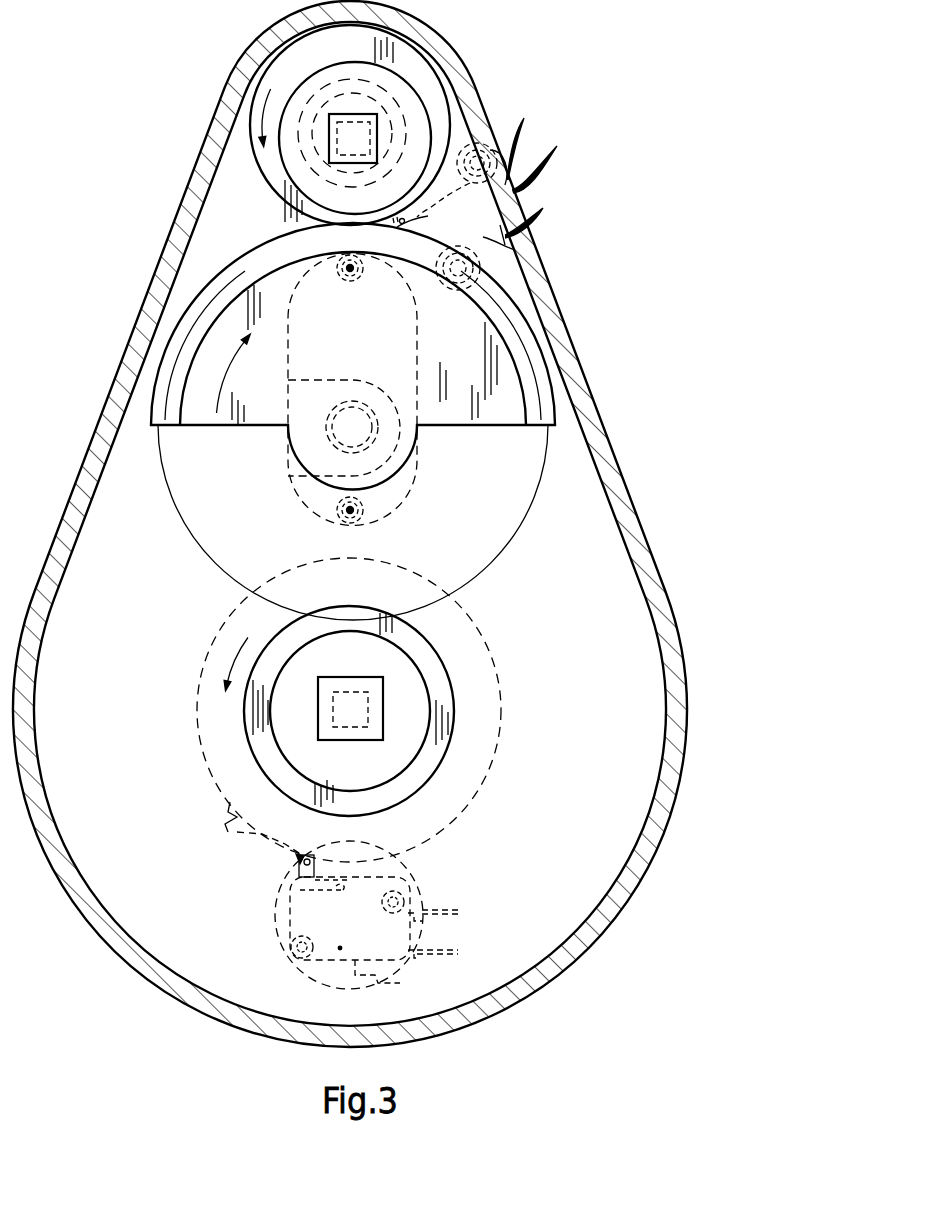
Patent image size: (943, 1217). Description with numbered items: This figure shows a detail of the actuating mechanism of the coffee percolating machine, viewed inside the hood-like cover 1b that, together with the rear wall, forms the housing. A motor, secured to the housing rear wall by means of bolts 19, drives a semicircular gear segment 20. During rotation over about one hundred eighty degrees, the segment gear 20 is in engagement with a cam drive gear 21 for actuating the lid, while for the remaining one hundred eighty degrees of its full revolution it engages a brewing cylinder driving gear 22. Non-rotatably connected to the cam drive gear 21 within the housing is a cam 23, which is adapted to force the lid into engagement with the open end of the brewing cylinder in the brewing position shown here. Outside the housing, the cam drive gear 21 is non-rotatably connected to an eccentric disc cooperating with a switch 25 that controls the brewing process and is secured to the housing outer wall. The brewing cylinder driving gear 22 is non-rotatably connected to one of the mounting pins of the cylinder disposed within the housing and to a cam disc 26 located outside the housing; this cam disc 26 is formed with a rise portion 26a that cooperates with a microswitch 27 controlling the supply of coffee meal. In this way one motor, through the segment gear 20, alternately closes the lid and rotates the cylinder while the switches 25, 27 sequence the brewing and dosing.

The hood-like cover 1b is at (605, 438).
The bolts 19 is at (352, 279).
The semicircular gear segment 20 is at (477, 367).
The cam drive gear 21 is at (440, 94).
The cam 23 is at (423, 163).
The switch 25 is at (483, 237).
The brewing cylinder driving gear 22 is at (445, 691).
The cam disc 26 is at (492, 772).
The rise portion 26a is at (226, 826).
The microswitch 27 is at (267, 923).